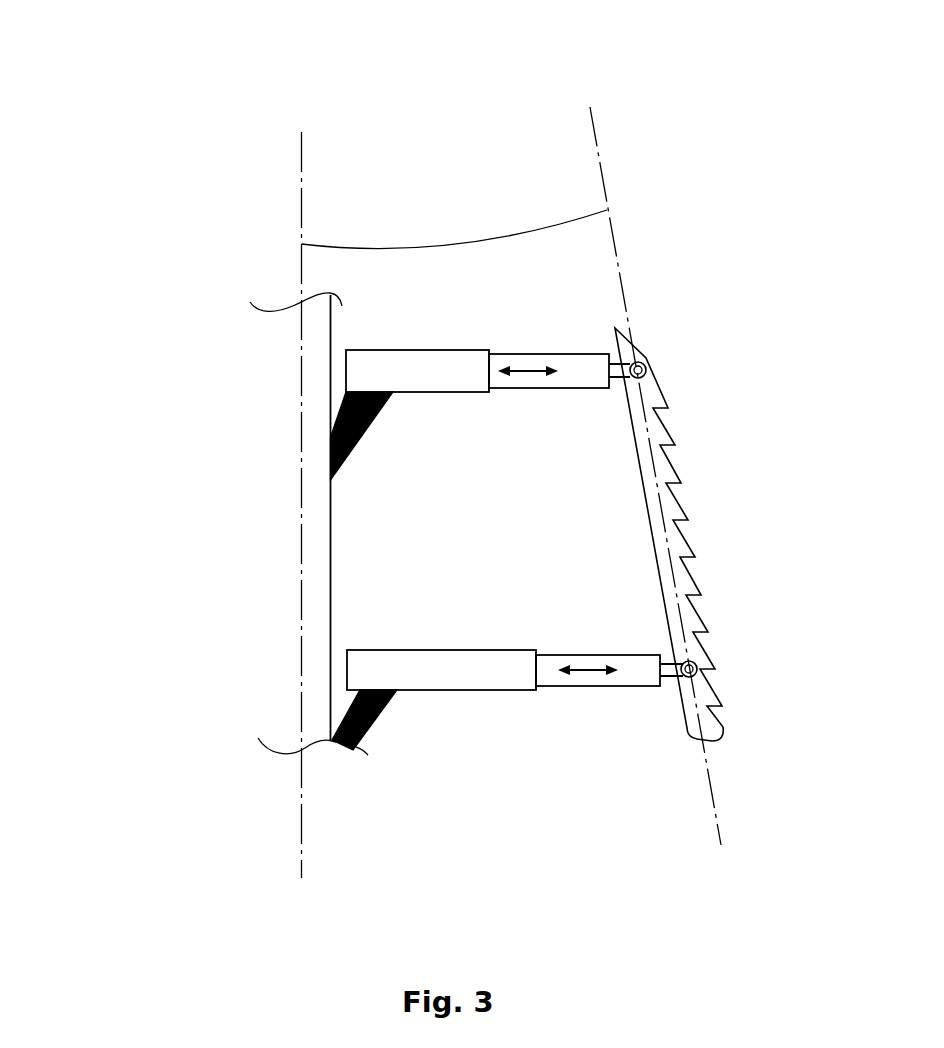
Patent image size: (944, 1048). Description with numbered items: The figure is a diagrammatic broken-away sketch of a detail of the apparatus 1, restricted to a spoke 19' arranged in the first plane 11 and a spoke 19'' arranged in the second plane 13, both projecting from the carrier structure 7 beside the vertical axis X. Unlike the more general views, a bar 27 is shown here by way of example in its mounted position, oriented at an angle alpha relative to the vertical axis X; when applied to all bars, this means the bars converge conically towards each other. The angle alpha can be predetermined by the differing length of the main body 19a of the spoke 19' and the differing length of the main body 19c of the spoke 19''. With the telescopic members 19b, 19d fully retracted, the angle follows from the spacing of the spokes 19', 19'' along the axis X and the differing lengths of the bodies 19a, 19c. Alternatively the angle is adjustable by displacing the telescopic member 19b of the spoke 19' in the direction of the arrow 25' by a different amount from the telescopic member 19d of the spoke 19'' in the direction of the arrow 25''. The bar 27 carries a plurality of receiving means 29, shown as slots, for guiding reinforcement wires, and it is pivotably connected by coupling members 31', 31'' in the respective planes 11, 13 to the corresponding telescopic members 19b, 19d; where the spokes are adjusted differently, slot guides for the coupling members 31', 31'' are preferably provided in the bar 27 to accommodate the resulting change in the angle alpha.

The adjustment device 1 is at (150, 115).
The vertical axis X is at (301, 212).
The support wall 7 is at (312, 494).
The first plane 11 is at (213, 335).
The second plane 13 is at (213, 650).
The spoke 19' is at (543, 319).
The spoke 19'' is at (515, 697).
The main body 19a is at (463, 367).
The telescopic member 19b is at (587, 363).
The main body 19c is at (421, 683).
The telescopic member 19d is at (593, 680).
The arrow 25' is at (522, 428).
The arrow 25'' is at (571, 613).
The bar 27 is at (663, 462).
The receiving means 29 is at (694, 541).
The coupling member 31' is at (698, 345).
The coupling member 31'' is at (747, 633).